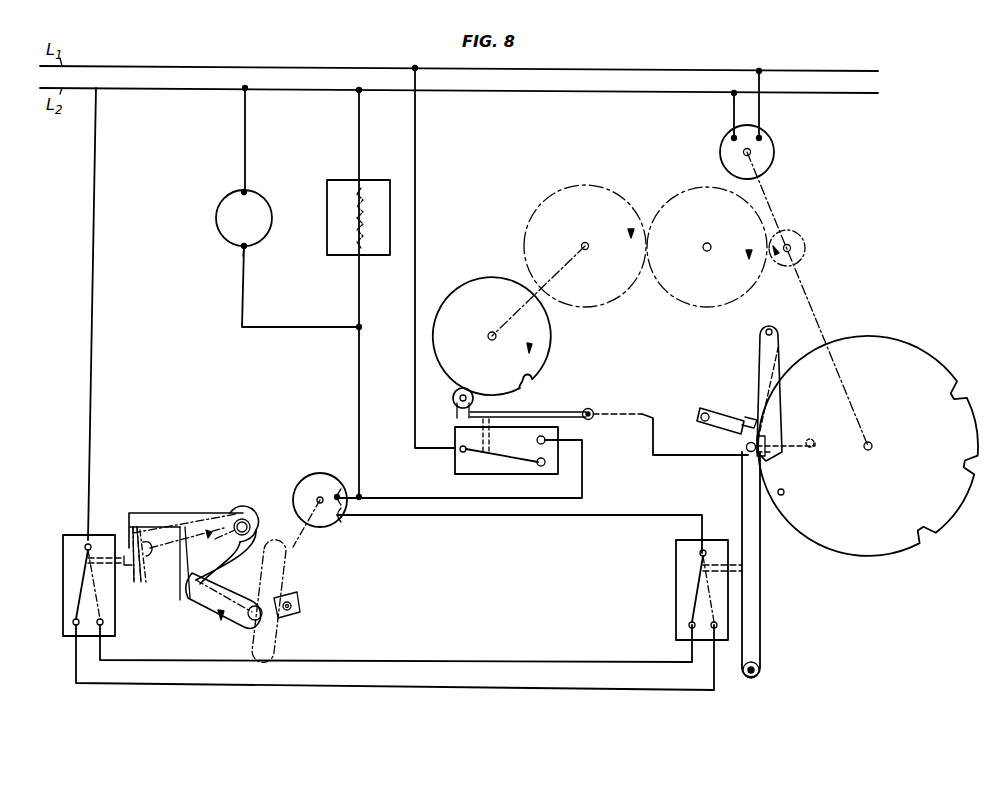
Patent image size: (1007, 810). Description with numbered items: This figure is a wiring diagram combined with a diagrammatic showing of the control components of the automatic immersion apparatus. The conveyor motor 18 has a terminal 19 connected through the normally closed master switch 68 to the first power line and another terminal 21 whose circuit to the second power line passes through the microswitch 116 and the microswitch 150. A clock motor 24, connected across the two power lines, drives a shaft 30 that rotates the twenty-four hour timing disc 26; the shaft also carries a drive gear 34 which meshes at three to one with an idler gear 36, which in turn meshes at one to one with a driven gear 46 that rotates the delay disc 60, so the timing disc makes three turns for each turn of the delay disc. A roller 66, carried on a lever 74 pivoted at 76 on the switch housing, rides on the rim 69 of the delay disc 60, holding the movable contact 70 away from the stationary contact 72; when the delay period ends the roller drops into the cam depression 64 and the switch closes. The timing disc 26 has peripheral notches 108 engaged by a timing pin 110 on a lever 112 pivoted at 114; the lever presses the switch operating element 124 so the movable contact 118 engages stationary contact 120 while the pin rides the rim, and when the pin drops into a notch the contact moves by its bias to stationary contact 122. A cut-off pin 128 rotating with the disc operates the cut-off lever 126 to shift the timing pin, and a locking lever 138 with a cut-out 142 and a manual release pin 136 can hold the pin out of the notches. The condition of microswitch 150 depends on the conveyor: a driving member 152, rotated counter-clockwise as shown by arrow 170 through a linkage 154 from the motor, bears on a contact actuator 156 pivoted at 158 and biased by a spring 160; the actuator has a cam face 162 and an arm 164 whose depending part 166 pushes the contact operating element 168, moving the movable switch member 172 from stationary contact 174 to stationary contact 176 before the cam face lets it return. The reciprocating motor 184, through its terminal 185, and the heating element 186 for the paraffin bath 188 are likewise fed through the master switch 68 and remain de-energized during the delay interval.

The conveyor motor 18 is at (497, 499).
The terminal 19 is at (339, 485).
The terminal 21 is at (343, 527).
The clock motor 24 is at (774, 150).
The timing disc 26 is at (868, 442).
The shaft 30 is at (807, 301).
The drive gear 34 is at (804, 244).
The idler gear 36 is at (680, 198).
The driven gear 46 is at (540, 206).
The delay disc 60 is at (510, 321).
The cam depression 64 is at (536, 380).
The roller 66 is at (456, 397).
The master switch 68 is at (460, 458).
The rim 69 is at (551, 336).
The movable contact 70 is at (513, 462).
The stationary contact 72 is at (550, 443).
The lever 74 is at (553, 409).
The pivot 76 is at (594, 410).
The notches 108 is at (929, 538).
The timing pin 110 is at (746, 447).
The lever 112 is at (762, 593).
The pivot 114 is at (753, 680).
The microswitch 116 is at (686, 599).
The movable contact 118 is at (695, 587).
The stationary contact 120 is at (690, 632).
The stationary contact 122 is at (712, 632).
The switch operating element 124 is at (738, 564).
The cut-off lever 126 is at (750, 370).
The cut-off pin 128 is at (784, 495).
The pin 136 is at (700, 421).
The locking lever 138 is at (710, 403).
The cut-out 142 is at (746, 405).
The microswitch 150 is at (363, 612).
The driving member 152 is at (221, 621).
The linkage 154 is at (292, 554).
The contact actuator 156 is at (232, 569).
The pivot 158 is at (251, 527).
The spring 160 is at (236, 514).
The cam face 162 is at (216, 556).
The arm 164 is at (150, 515).
The depending part 166 is at (150, 552).
The contact operating element 168 is at (140, 591).
The arrow 170 is at (195, 617).
The movable switch member 172 is at (78, 593).
The stationary contact 174 is at (104, 626).
The stationary contact 176 is at (72, 630).
The motor 184 is at (223, 232).
The terminal 185 is at (249, 250).
The heating element 186 is at (356, 246).
The paraffin bath 188 is at (327, 188).